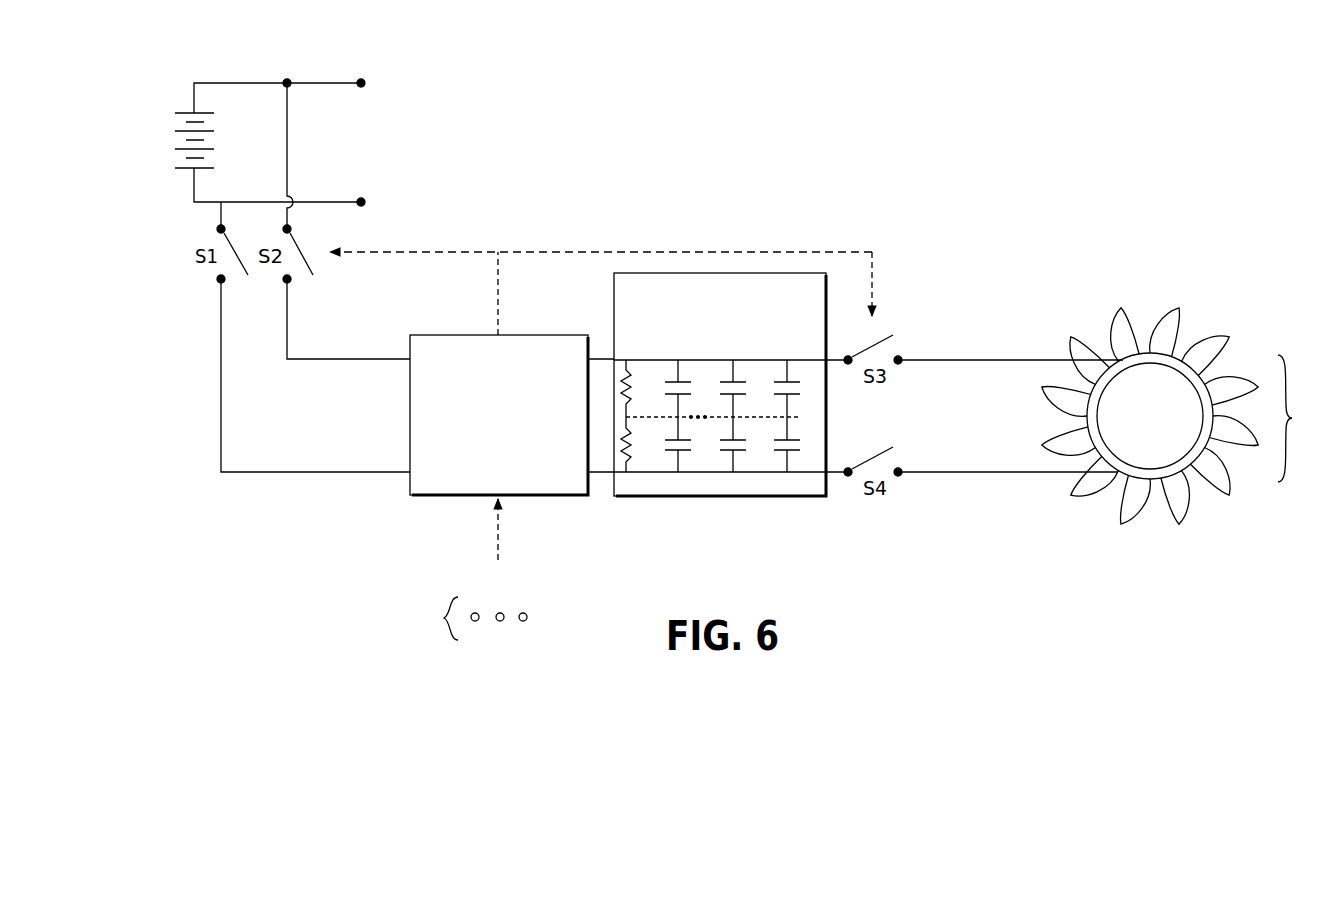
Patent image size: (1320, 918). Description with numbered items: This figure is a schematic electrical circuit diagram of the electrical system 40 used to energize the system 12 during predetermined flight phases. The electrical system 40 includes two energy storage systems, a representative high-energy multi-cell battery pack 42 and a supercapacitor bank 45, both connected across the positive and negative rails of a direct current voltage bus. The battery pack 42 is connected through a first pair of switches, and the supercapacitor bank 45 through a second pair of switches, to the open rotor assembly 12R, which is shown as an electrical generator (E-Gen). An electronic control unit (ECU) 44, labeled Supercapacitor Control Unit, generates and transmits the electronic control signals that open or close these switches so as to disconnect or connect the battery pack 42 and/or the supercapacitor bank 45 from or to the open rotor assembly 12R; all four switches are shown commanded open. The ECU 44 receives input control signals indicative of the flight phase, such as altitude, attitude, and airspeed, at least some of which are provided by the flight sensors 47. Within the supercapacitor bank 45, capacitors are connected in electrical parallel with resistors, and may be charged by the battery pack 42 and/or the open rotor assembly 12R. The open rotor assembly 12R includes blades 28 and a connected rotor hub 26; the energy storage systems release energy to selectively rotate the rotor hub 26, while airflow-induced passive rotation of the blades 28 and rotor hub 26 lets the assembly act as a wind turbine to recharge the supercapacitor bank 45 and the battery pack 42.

The system 12 is at (864, 70).
The open rotor assembly 12R is at (1202, 286).
The rotor hub 26 is at (1155, 453).
The blades 28 is at (1180, 416).
The electrical system 40 is at (747, 190).
The battery pack 42 is at (146, 129).
The electronic control unit (ECU) 44 is at (453, 497).
The supercapacitor bank 45 is at (723, 497).
The flight sensors 47 is at (472, 569).